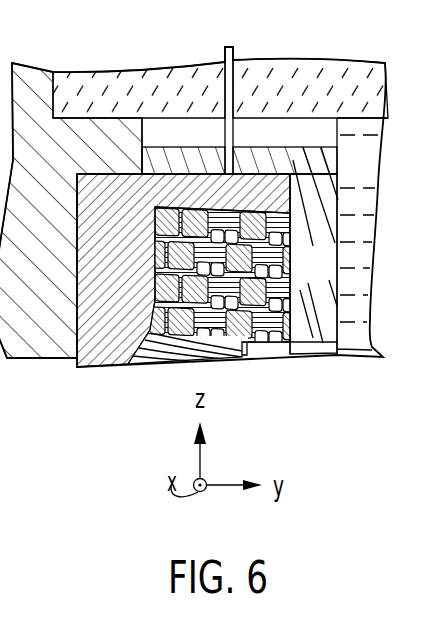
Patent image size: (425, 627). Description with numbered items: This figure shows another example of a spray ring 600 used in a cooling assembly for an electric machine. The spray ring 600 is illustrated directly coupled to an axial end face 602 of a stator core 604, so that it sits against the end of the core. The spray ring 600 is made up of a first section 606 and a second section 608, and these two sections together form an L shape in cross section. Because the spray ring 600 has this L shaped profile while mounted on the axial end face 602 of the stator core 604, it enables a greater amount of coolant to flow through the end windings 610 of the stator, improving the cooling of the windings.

The spray ring 600 is at (137, 135).
The axial end face 602 is at (338, 303).
The stator core 604 is at (346, 165).
The first section 606 is at (325, 276).
The second section 608 is at (239, 160).
The end windings 610 is at (165, 335).